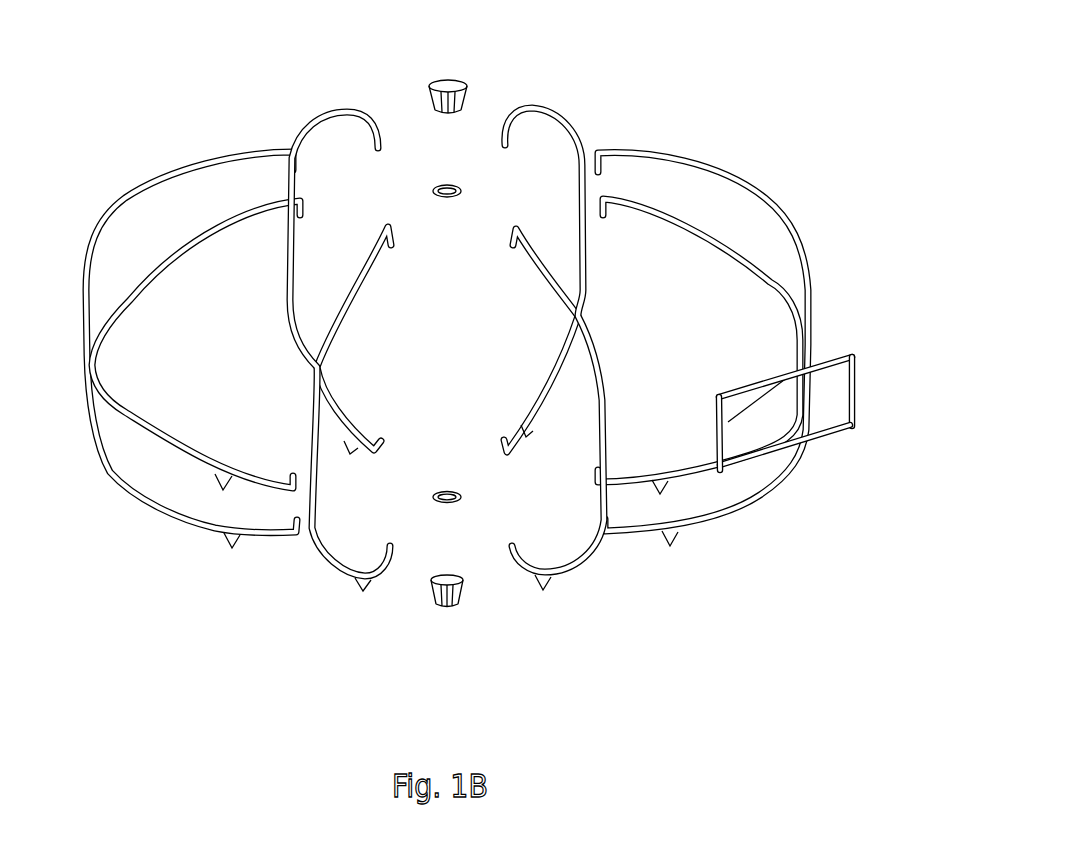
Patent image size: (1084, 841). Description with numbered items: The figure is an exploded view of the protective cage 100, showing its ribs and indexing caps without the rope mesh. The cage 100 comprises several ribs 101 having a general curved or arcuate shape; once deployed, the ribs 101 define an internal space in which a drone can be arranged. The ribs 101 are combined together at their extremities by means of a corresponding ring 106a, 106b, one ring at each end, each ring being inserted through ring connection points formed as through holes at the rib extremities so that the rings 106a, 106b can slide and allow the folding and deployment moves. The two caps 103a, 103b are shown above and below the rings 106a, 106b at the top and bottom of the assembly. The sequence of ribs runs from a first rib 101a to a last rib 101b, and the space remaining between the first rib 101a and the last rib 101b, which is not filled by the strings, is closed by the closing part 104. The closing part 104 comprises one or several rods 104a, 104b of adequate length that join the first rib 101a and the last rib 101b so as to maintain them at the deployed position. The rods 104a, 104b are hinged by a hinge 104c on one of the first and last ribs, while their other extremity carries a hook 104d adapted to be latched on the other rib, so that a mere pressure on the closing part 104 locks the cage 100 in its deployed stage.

The protective cage 100 is at (502, 342).
The ribs 101 is at (240, 148).
The first rib 101a is at (773, 491).
The last rib 101b is at (598, 549).
The cap 103a is at (447, 70).
The cap 103b is at (447, 615).
The closing part 104 is at (801, 378).
The rod of the closing part 104a is at (815, 443).
The rod of the closing part 104b is at (822, 400).
The hinge of the closing part 104c is at (855, 367).
The hook of the closing part 104d is at (718, 430).
The ring 106a is at (441, 183).
The ring 106b is at (441, 507).